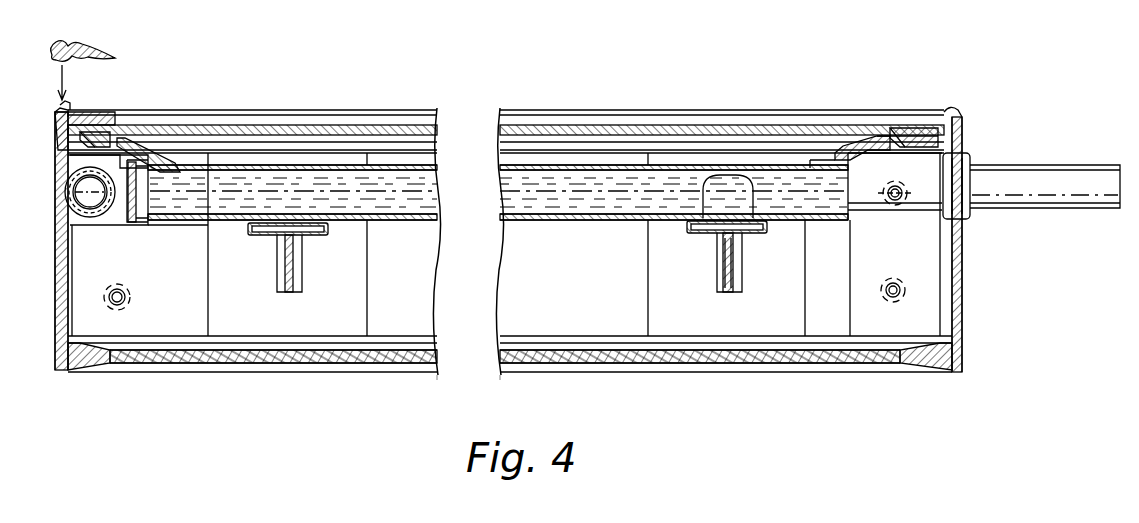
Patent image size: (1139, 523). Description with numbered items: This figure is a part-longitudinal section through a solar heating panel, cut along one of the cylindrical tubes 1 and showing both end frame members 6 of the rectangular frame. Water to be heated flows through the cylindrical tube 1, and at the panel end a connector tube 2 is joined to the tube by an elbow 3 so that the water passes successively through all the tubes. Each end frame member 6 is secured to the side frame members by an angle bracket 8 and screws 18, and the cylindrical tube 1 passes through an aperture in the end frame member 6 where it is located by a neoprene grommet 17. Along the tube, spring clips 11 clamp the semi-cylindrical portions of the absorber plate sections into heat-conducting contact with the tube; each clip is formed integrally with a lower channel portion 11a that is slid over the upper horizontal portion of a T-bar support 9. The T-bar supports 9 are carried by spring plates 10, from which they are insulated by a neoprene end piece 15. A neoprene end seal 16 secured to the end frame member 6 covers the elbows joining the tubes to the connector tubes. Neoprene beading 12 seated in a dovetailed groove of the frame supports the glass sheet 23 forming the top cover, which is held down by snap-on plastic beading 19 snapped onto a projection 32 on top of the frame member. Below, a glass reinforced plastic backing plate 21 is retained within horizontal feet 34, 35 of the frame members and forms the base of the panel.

The cylindrical tube 1 is at (440, 178).
The connector tube 2 is at (64, 193).
The elbow 3 is at (134, 224).
The end frame member 6 is at (56, 238).
The angle bracket 8 is at (80, 303).
The T-bar support 9 is at (727, 292).
The spring plate 10 is at (652, 283).
The spring clip 11 is at (738, 210).
The lower channel portion 11a is at (316, 237).
The neoprene beading 12 is at (100, 140).
The neoprene end piece 15 is at (303, 283).
The neoprene end seal 16 is at (162, 168).
The neoprene grommet 17 is at (967, 165).
The screw 18 is at (122, 300).
The snap-on plastic beading 19 is at (74, 44).
The backing plate 21 is at (498, 362).
The glass sheet 23 is at (498, 108).
The projection 32 is at (60, 112).
The horizontal foot 34 is at (100, 376).
The horizontal foot 35 is at (55, 362).